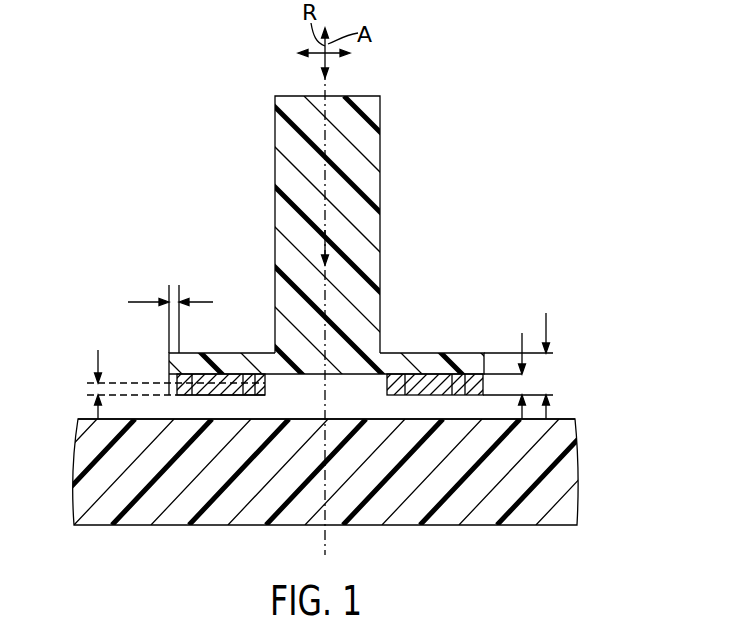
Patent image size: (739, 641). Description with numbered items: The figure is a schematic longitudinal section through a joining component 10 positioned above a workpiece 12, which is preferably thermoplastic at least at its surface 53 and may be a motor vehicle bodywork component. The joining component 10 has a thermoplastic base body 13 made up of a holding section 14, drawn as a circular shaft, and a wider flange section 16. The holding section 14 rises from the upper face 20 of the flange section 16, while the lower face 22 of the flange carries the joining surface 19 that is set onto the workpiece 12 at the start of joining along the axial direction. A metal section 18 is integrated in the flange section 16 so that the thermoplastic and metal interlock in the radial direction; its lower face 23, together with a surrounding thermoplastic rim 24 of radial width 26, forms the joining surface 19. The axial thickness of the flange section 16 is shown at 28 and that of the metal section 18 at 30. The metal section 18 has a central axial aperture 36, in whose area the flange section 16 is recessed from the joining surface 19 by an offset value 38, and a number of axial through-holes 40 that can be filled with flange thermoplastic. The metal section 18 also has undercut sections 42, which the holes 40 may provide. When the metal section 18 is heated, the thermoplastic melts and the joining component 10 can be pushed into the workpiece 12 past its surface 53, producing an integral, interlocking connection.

The joining component 10 is at (435, 88).
The workpiece 12 is at (563, 511).
The base body 13 is at (383, 172).
The holding section 14 is at (286, 136).
The flange section 16 is at (434, 365).
The metal section 18 is at (442, 396).
The joining surface 19 is at (233, 396).
The upper face 20 is at (227, 353).
The lower face 22 is at (176, 396).
The lower face of the metal section 23 is at (209, 396).
The rim 24 is at (480, 380).
The width of the rim 26 is at (173, 285).
The thickness of the flange section 28 is at (548, 323).
The axial thickness 30 is at (521, 336).
The central axial aperture 36 is at (383, 392).
The offset value 38 is at (97, 387).
The axial through-holes 40 is at (402, 384).
The undercut sections 42 is at (207, 383).
The surface of the workpiece 53 is at (85, 420).